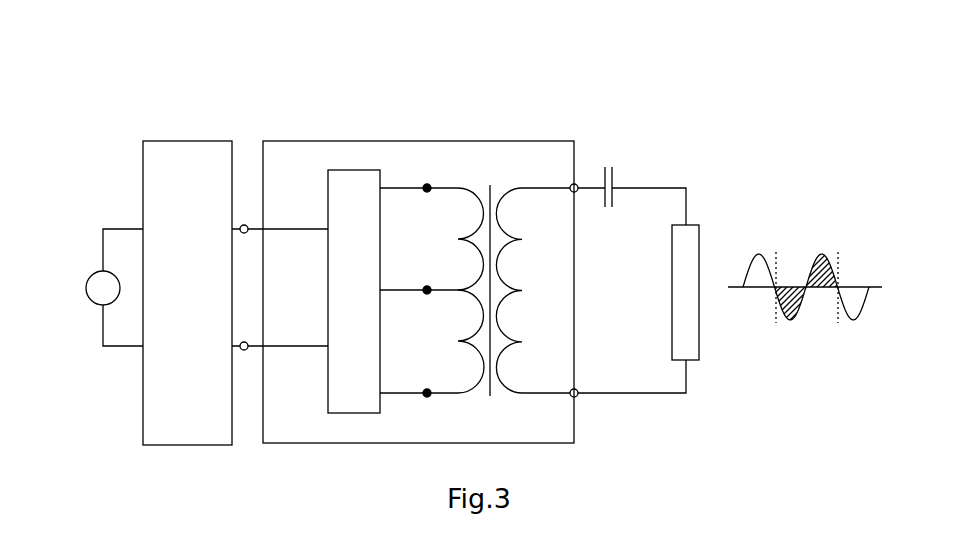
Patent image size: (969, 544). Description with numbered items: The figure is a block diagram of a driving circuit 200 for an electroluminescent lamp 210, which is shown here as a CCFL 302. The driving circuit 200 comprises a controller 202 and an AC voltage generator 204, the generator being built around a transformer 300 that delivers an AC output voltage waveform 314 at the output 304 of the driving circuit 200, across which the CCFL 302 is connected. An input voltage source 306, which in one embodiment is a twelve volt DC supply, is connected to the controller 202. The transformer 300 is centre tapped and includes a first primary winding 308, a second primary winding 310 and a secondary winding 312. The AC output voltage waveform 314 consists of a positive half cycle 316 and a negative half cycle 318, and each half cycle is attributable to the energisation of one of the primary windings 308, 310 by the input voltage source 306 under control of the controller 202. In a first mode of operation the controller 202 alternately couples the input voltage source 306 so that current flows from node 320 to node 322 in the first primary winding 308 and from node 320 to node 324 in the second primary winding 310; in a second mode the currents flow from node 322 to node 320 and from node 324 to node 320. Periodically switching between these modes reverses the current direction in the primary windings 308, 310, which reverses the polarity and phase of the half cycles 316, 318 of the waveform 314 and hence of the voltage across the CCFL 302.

The driving circuit 200 is at (346, 66).
The controller 202 is at (190, 120).
The AC voltage generator 204 is at (447, 120).
The electroluminescent lamp 210 is at (699, 352).
The transformer 300 is at (498, 175).
The CCFL 302 is at (672, 308).
The output 304 is at (580, 203).
The input voltage source 306 is at (100, 307).
The first primary winding 308 is at (468, 243).
The second primary winding 310 is at (468, 348).
The secondary winding 312 is at (500, 312).
The AC output voltage waveform 314 is at (790, 238).
The positive half cycle 316 is at (824, 254).
The negative half cycle 318 is at (790, 322).
The node 320 is at (427, 294).
The node 322 is at (427, 185).
The node 324 is at (427, 396).